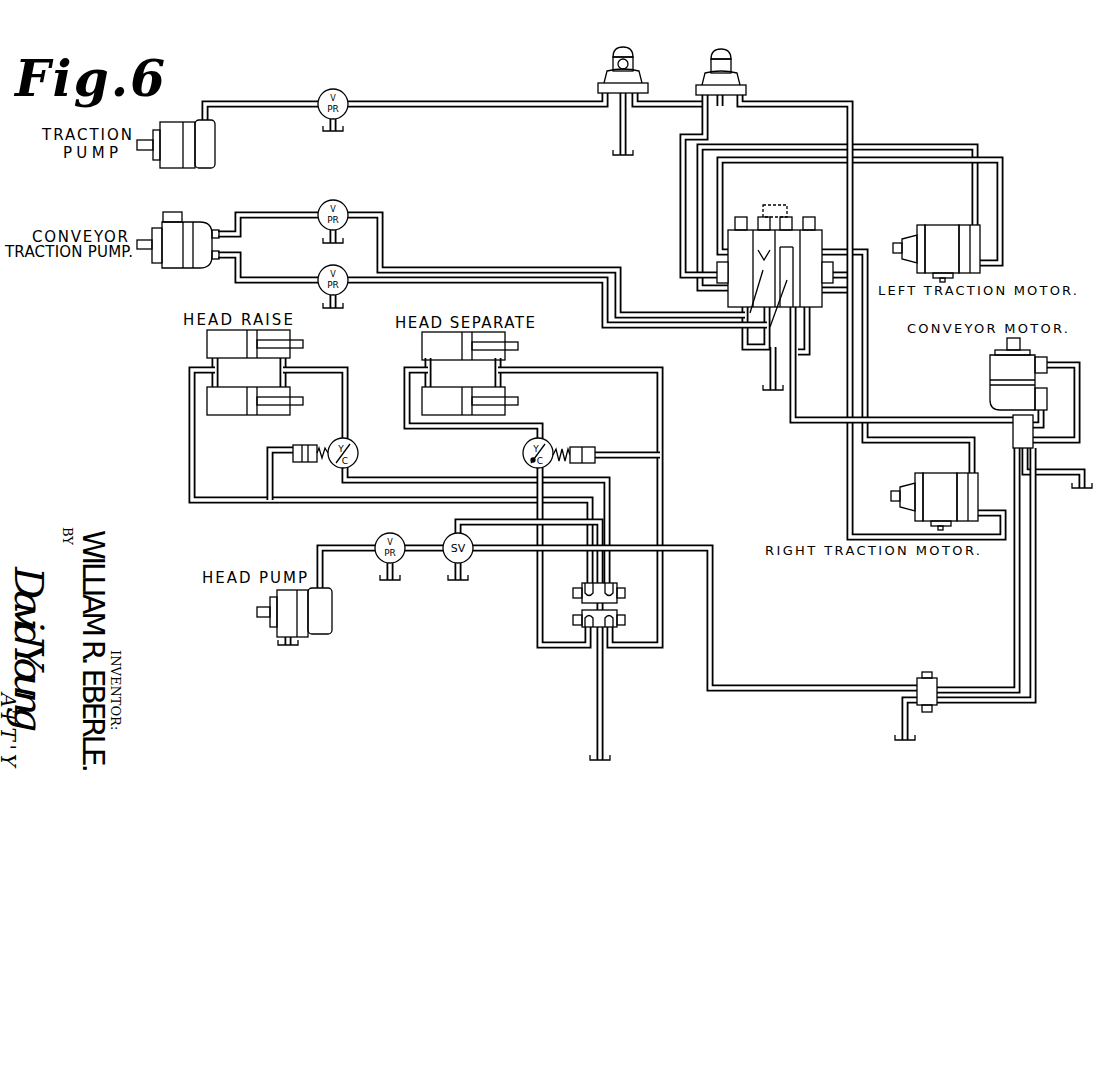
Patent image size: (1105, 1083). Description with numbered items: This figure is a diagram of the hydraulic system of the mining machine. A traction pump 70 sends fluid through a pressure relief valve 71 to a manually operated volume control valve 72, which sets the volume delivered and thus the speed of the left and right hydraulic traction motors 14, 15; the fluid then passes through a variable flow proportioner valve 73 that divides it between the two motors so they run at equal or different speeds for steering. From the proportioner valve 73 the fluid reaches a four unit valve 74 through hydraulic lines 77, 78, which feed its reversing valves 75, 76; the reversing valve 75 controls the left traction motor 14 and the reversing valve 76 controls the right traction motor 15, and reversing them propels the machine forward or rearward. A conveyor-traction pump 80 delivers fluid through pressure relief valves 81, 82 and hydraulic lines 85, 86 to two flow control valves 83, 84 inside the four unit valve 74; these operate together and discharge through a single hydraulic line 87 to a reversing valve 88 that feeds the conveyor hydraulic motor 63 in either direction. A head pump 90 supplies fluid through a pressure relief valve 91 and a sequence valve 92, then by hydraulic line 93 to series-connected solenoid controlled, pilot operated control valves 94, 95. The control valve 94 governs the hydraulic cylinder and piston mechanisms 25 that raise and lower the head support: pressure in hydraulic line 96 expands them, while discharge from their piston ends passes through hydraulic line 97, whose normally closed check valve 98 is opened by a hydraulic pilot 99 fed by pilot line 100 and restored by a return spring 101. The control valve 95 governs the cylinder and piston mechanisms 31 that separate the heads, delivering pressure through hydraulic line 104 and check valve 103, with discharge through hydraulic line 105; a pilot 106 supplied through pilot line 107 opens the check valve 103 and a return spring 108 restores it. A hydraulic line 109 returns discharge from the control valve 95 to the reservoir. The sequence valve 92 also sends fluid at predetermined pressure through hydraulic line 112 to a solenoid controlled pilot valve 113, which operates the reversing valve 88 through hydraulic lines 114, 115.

The left hydraulic traction motor 14 is at (942, 235).
The right hydraulic traction motor 15 is at (933, 487).
The hydraulic cylinder and piston mechanisms 25 is at (212, 395).
The hydraulic cylinder and piston mechanisms 31 is at (425, 397).
The conveyor hydraulic motor 63 is at (993, 368).
The traction pump 70 is at (213, 148).
The pressure relief valve 71 is at (345, 95).
The volume control valve 72 is at (607, 73).
The variable flow proportioner valve 73 is at (747, 73).
The four unit valve 74 is at (777, 245).
The reversing valve 75 is at (730, 298).
The reversing valve 76 is at (815, 237).
The hydraulic line 77 is at (685, 223).
The hydraulic line 78 is at (852, 123).
The conveyor-traction pump 80 is at (160, 263).
The pressure relief valve 81 is at (346, 204).
The pressure relief valve 82 is at (344, 294).
The flow control valve 83 is at (762, 240).
The flow control valve 84 is at (793, 237).
The hydraulic line 85 is at (527, 267).
The hydraulic line 86 is at (573, 283).
The hydraulic line 87 is at (790, 408).
The reversing valve 88 is at (1023, 435).
The head pump 90 is at (323, 627).
The pressure relief valve 91 is at (377, 540).
The sequence valve 92 is at (473, 557).
The hydraulic line 93 is at (493, 522).
The control valve 94 is at (575, 595).
The control valve 95 is at (577, 620).
The hydraulic line 96 is at (302, 502).
The hydraulic line 97 is at (350, 408).
The check valve 98 is at (360, 453).
The hydraulic pilot 99 is at (295, 447).
The pilot line 100 is at (270, 477).
The return spring 101 is at (322, 457).
The check valve 103 is at (550, 440).
The hydraulic line 104 is at (530, 425).
The hydraulic line 105 is at (668, 403).
The pilot 106 is at (590, 447).
The pilot line 107 is at (628, 457).
The return spring 108 is at (571, 448).
The hydraulic line 109 is at (595, 692).
The hydraulic line 112 is at (713, 628).
The solenoid controlled pilot valve 113 is at (920, 683).
The hydraulic line 114 is at (1015, 607).
The hydraulic line 115 is at (1033, 625).